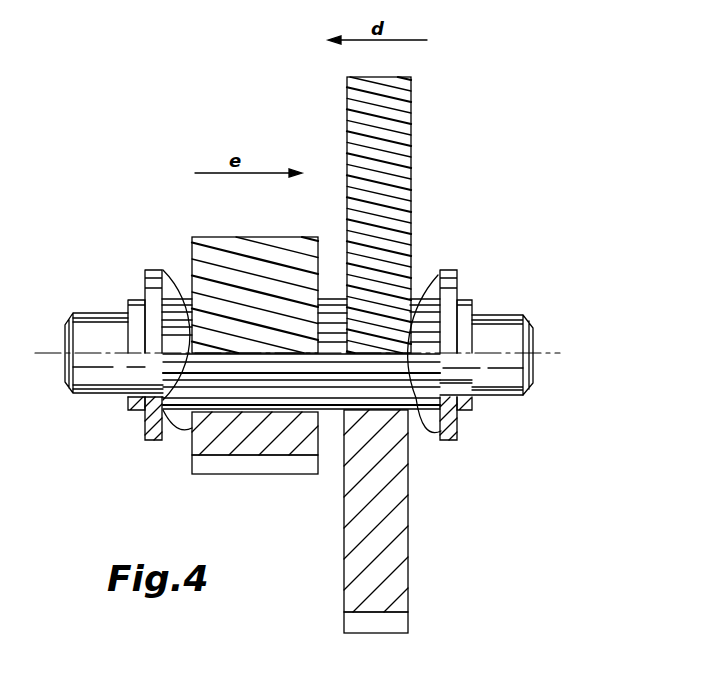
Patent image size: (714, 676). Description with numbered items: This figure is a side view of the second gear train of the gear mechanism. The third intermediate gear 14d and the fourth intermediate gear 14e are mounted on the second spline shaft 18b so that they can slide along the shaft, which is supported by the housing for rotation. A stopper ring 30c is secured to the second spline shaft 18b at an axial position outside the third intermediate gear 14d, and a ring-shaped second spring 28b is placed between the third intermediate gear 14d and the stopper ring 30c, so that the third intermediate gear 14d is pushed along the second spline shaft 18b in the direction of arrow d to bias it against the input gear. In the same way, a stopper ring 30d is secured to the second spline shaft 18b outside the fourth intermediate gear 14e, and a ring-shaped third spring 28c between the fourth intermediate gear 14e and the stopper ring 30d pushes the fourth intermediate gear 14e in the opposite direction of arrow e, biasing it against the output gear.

The second spline shaft 18b is at (535, 321).
The third spring 28c is at (170, 415).
The second spring 28b is at (428, 435).
The stopper ring 30d is at (145, 270).
The stopper ring 30c is at (457, 270).
The fourth intermediate gear 14e is at (252, 237).
The third intermediate gear 14d is at (412, 133).